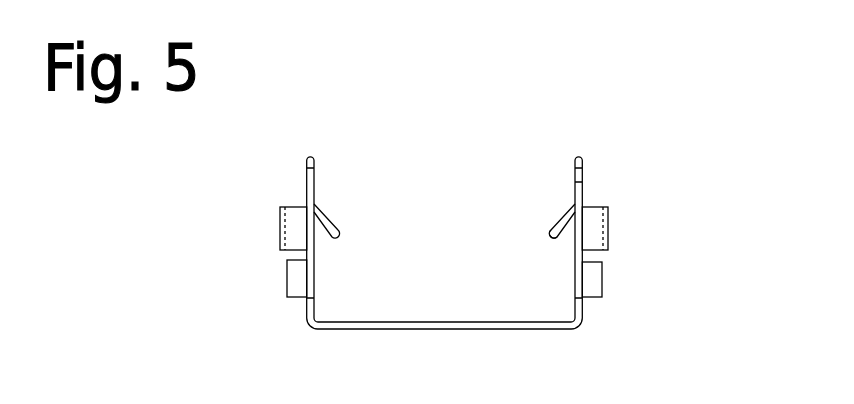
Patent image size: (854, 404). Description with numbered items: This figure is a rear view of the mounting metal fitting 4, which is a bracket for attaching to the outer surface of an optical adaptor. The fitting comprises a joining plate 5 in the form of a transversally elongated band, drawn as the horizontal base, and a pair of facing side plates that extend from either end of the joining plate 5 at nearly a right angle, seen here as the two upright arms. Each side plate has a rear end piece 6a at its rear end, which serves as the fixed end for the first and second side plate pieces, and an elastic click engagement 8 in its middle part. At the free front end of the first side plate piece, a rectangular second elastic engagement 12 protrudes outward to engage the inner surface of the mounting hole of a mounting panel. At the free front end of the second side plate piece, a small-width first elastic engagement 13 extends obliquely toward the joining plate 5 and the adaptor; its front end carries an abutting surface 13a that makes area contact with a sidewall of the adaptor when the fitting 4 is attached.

The mounting metal fitting 4 is at (474, 237).
The joining plate 5 is at (443, 331).
The rear end piece 6a is at (583, 183).
The elastic click engagement 8 is at (608, 232).
The second elastic engagement 12 is at (602, 283).
The first elastic engagement 13 is at (557, 222).
The abutting surface 13a is at (548, 235).